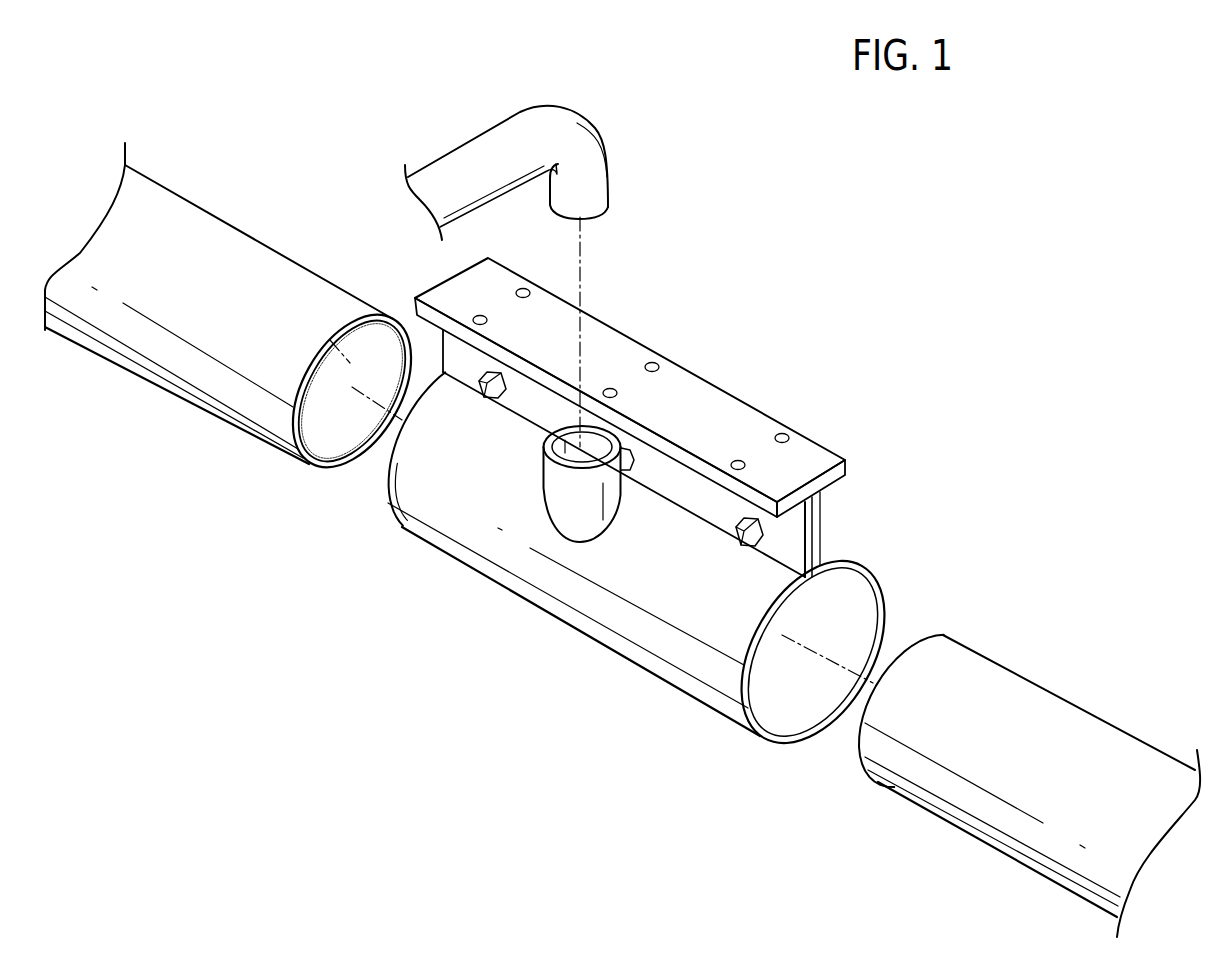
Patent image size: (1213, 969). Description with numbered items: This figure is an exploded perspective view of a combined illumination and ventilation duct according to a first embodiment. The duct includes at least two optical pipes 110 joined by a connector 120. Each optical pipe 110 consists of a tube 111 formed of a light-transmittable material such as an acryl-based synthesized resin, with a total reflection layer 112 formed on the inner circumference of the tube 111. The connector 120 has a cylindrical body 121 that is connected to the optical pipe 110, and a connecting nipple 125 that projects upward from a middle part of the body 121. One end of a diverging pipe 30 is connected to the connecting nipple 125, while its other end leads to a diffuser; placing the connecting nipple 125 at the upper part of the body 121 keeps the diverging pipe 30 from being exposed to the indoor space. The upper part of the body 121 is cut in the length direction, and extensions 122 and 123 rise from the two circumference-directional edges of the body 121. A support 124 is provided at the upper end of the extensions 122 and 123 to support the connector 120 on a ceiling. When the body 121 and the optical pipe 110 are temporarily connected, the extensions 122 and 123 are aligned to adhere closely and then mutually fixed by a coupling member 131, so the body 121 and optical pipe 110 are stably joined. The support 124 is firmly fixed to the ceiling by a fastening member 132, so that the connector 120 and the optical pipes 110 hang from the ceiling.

The diverging pipe 30 is at (452, 163).
The optical pipe 110 is at (622, 540).
The tube 111 is at (155, 365).
The total reflection layer 112 is at (352, 391).
The connector 120 is at (630, 387).
The body 121 is at (656, 549).
The extension 122 is at (817, 527).
The extension 123 is at (808, 553).
The support 124 is at (622, 337).
The connecting nipple 125 is at (573, 520).
The coupling member 131 is at (740, 542).
The fastening member 132 is at (785, 435).